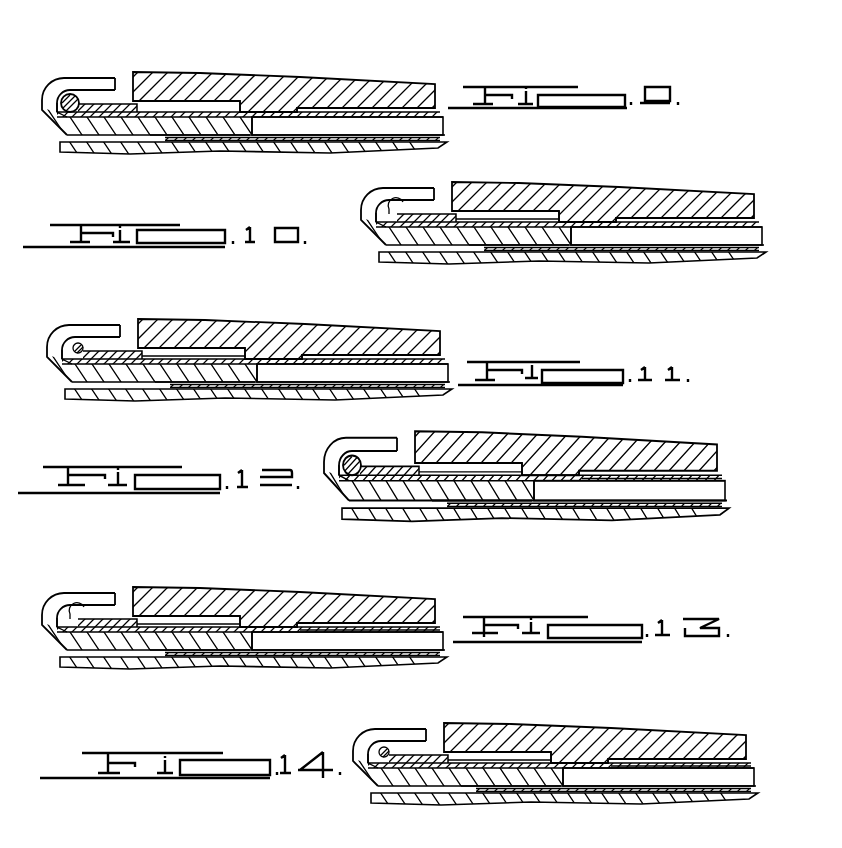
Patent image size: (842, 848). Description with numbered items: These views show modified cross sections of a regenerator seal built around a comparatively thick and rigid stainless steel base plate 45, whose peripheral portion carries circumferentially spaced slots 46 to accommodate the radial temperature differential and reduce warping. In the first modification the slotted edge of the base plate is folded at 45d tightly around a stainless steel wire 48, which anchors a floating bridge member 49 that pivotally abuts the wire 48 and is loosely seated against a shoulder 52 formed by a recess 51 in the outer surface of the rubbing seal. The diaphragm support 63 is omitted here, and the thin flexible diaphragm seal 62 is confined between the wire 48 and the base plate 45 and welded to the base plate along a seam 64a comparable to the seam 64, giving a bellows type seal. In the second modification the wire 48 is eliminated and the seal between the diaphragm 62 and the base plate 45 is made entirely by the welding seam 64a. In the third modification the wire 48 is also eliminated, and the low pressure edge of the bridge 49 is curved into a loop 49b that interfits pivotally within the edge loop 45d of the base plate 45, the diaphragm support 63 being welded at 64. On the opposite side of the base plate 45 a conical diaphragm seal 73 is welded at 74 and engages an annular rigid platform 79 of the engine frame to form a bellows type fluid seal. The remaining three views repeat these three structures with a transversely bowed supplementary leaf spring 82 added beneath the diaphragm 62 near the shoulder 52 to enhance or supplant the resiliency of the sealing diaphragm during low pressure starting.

In FIG. 9, the base plate portion 45 is at (107, 127).
In FIG. 10, the base plate portion 45 is at (433, 238).
In FIG. 11, the base plate portion 45 is at (123, 378).
In FIG. 12, the base plate portion 45 is at (413, 492).
In FIG. 13, the base plate portion 45 is at (110, 643).
In FIG. 14, the base plate portion 45 is at (437, 781).
In FIG. 9, the folded slotted edge of base plate 45d is at (103, 78).
In FIG. 10, the folded slotted edge of base plate 45d is at (404, 188).
In FIG. 11, the folded slotted edge of base plate 45d is at (107, 325).
In FIG. 12, the folded slotted edge of base plate 45d is at (392, 440).
In FIG. 13, the folded slotted edge of base plate 45d is at (117, 563).
In FIG. 14, the folded slotted edge of base plate 45d is at (417, 730).
In FIG. 9, the circumferentially spaced slots 46 is at (397, 120).
In FIG. 9, the stainless steel wire 48 is at (72, 94).
In FIG. 12, the stainless steel wire 48 is at (350, 458).
In FIG. 9, the arcuate bridge member 49 is at (124, 103).
In FIG. 10, the arcuate bridge member 49 is at (407, 224).
In FIG. 11, the arcuate bridge member 49 is at (93, 360).
In FIG. 12, the arcuate bridge member 49 is at (380, 474).
In FIG. 13, the arcuate bridge member 49 is at (125, 619).
In FIG. 14, the arcuate bridge member 49 is at (402, 764).
In FIG. 11, the loop of bridge member 49b is at (80, 350).
In FIG. 14, the loop of bridge member 49b is at (383, 746).
In FIG. 9, the recess in rubbing seal 51 is at (184, 100).
In FIG. 10, the recess in rubbing seal 51 is at (483, 213).
In FIG. 11, the recess in rubbing seal 51 is at (187, 345).
In FIG. 12, the recess in rubbing seal 51 is at (463, 464).
In FIG. 13, the recess in rubbing seal 51 is at (180, 616).
In FIG. 14, the recess in rubbing seal 51 is at (493, 744).
In FIG. 9, the shoulder 52 is at (250, 102).
In FIG. 10, the shoulder 52 is at (580, 208).
In FIG. 11, the shoulder 52 is at (261, 358).
In FIG. 12, the shoulder 52 is at (544, 468).
In FIG. 13, the shoulder 52 is at (250, 622).
In FIG. 14, the shoulder 52 is at (580, 760).
In FIG. 9, the diaphragm seal 62 is at (287, 112).
In FIG. 10, the diaphragm seal 62 is at (533, 222).
In FIG. 11, the diaphragm seal 62 is at (327, 366).
In FIG. 12, the diaphragm seal 62 is at (484, 476).
In FIG. 13, the diaphragm seal 62 is at (207, 628).
In FIG. 14, the diaphragm seal 62 is at (703, 758).
In FIG. 11, the diaphragm support 63 is at (220, 358).
In FIG. 14, the diaphragm support 63 is at (507, 760).
In FIG. 11, the welding seam 64 is at (65, 360).
In FIG. 14, the welding seam 64 is at (377, 764).
In FIG. 9, the welding seam 64a is at (65, 116).
In FIG. 10, the welding seam 64a is at (378, 224).
In FIG. 12, the welding seam 64a is at (345, 472).
In FIG. 13, the welding seam 64a is at (62, 632).
In FIG. 9, the conical diaphragm seal 73 is at (273, 137).
In FIG. 10, the conical diaphragm seal 73 is at (538, 251).
In FIG. 11, the conical diaphragm seal 73 is at (280, 383).
In FIG. 12, the conical diaphragm seal 73 is at (613, 502).
In FIG. 13, the conical diaphragm seal 73 is at (295, 651).
In FIG. 14, the conical diaphragm seal 73 is at (622, 781).
In FIG. 9, the weld 74 is at (173, 128).
In FIG. 10, the weld 74 is at (487, 244).
In FIG. 11, the weld 74 is at (178, 380).
In FIG. 12, the weld 74 is at (457, 496).
In FIG. 13, the weld 74 is at (173, 648).
In FIG. 14, the weld 74 is at (488, 781).
In FIG. 9, the annular rigid platform 79 is at (237, 145).
In FIG. 10, the annular rigid platform 79 is at (643, 258).
In FIG. 11, the annular rigid platform 79 is at (240, 395).
In FIG. 12, the annular rigid platform 79 is at (552, 516).
In FIG. 13, the annular rigid platform 79 is at (242, 661).
In FIG. 14, the annular rigid platform 79 is at (552, 796).
In FIG. 12, the supplementary leaf spring 82 is at (643, 481).
In FIG. 13, the supplementary leaf spring 82 is at (332, 632).
In FIG. 14, the supplementary leaf spring 82 is at (660, 768).